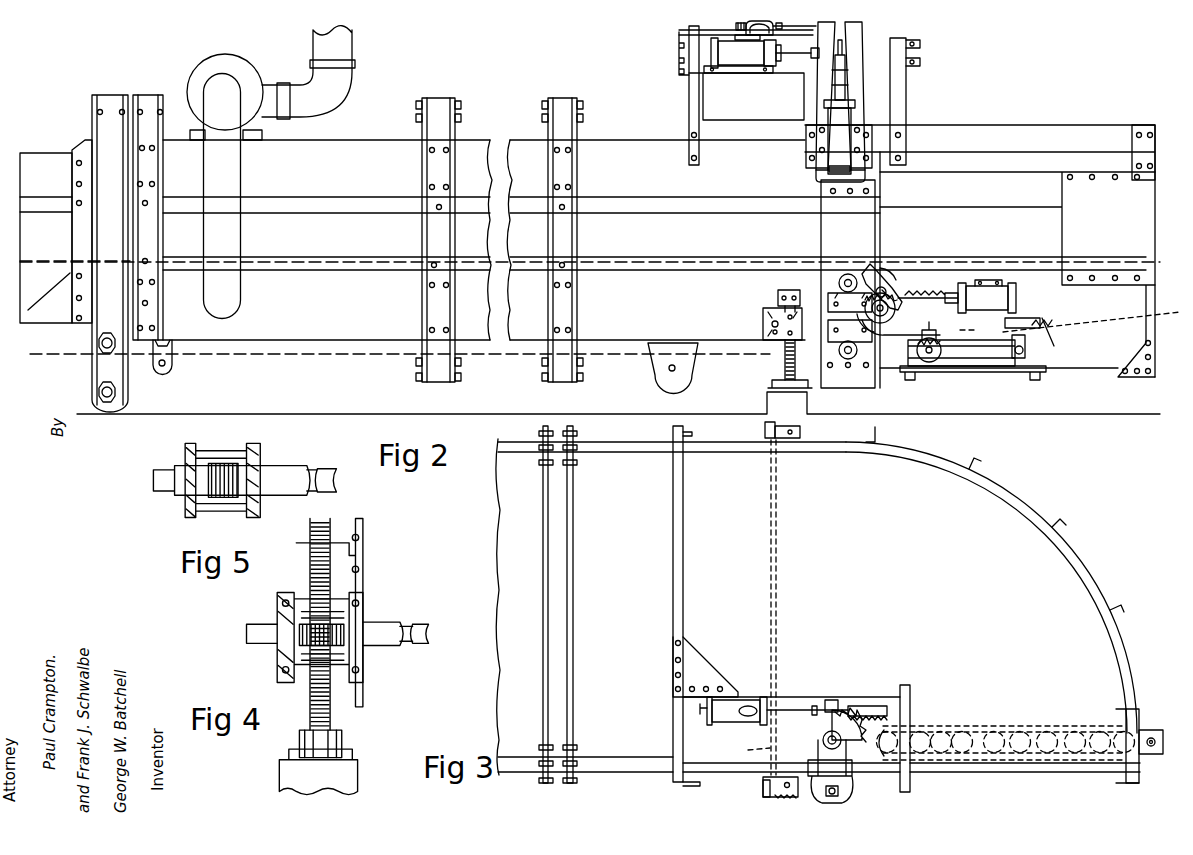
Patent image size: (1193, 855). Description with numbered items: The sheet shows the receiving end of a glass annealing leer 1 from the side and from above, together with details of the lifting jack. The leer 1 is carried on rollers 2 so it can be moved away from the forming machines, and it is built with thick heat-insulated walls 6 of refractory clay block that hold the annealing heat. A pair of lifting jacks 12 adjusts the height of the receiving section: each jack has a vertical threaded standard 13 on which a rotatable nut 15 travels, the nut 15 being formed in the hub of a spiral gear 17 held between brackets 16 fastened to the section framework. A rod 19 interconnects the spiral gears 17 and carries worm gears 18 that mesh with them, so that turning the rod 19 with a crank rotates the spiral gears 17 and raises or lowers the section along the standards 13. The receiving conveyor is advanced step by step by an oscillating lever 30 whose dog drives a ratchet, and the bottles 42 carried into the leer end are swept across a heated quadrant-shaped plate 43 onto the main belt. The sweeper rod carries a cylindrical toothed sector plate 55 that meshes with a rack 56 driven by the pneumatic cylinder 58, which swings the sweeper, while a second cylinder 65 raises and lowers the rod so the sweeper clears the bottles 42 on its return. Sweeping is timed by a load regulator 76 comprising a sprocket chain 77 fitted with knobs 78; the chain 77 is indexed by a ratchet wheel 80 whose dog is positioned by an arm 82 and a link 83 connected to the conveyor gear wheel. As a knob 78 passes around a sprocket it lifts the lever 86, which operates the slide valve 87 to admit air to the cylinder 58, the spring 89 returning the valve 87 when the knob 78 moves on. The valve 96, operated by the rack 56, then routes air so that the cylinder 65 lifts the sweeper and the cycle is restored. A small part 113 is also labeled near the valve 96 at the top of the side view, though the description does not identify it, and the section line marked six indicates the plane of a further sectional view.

In FIG. 2, the leer 1 is at (337, 155).
In FIG. 2, the rollers 2 is at (108, 412).
In FIG. 2, the wall 6 is at (892, 22).
In FIG. 2, the lifting jack 12 is at (785, 360).
In FIG. 4, the lifting jack 12 is at (310, 705).
In FIG. 2, the vertical threaded standard 13 is at (785, 368).
In FIG. 3, the vertical threaded standard 13 is at (787, 783).
In FIG. 4, the vertical threaded standard 13 is at (292, 688).
In FIG. 4, the rotatable nut 15 is at (315, 607).
In FIG. 2, the bracket 16 is at (764, 318).
In FIG. 3, the bracket 16 is at (763, 793).
In FIG. 5, the bracket 16 is at (178, 490).
In FIG. 4, the bracket 16 is at (272, 634).
In FIG. 2, the spiral gear 17 is at (776, 308).
In FIG. 4, the spiral gear 17 is at (325, 622).
In FIG. 2, the worm gear 18 is at (763, 328).
In FIG. 5, the worm gear 18 is at (211, 456).
In FIG. 2, the rod 19 is at (770, 335).
In FIG. 3, the rod 19 is at (765, 419).
In FIG. 5, the rod 19 is at (300, 478).
In FIG. 4, the rod 19 is at (392, 630).
In FIG. 2, the lever 30 is at (893, 300).
In FIG. 3, the bottles 42 is at (999, 736).
In FIG. 3, the plate 43 is at (936, 741).
In FIG. 3, the sector plate 55 is at (845, 718).
In FIG. 2, the rack 56 is at (814, 58).
In FIG. 3, the rack 56 is at (873, 710).
In FIG. 2, the cylinder 58 is at (743, 52).
In FIG. 3, the cylinder 58 is at (722, 705).
In FIG. 2, the cylinder 65 is at (838, 152).
In FIG. 3, the cylinder 65 is at (823, 780).
In FIG. 2, the load regulator 76 is at (985, 352).
In FIG. 2, the sprocket chain 77 is at (965, 368).
In FIG. 2, the knobs 78 is at (992, 340).
In FIG. 2, the ratchet wheel 80 is at (922, 356).
In FIG. 2, the arm 82 is at (928, 370).
In FIG. 2, the link 83 is at (912, 330).
In FIG. 2, the lever 86 is at (1030, 352).
In FIG. 2, the valve 87 is at (1020, 325).
In FIG. 2, the spring 89 is at (1050, 328).
In FIG. 2, the valve 96 is at (761, 36).
In FIG. 3, the valve 96 is at (752, 706).
In FIG. 2, the rod 113 is at (795, 18).